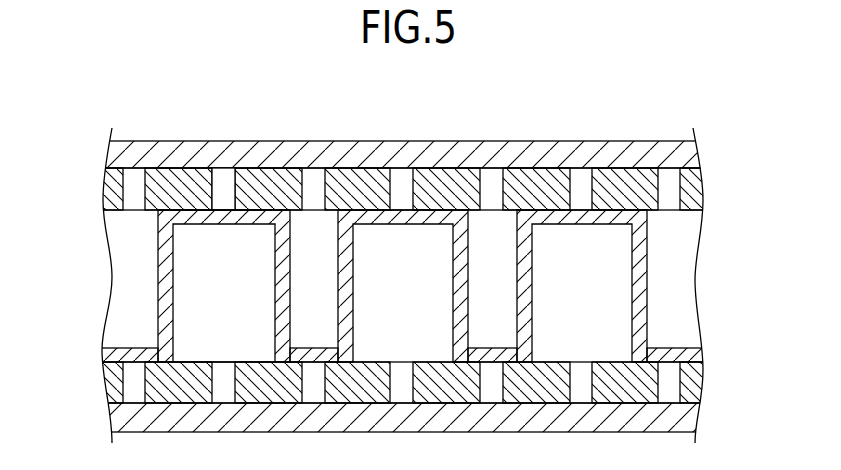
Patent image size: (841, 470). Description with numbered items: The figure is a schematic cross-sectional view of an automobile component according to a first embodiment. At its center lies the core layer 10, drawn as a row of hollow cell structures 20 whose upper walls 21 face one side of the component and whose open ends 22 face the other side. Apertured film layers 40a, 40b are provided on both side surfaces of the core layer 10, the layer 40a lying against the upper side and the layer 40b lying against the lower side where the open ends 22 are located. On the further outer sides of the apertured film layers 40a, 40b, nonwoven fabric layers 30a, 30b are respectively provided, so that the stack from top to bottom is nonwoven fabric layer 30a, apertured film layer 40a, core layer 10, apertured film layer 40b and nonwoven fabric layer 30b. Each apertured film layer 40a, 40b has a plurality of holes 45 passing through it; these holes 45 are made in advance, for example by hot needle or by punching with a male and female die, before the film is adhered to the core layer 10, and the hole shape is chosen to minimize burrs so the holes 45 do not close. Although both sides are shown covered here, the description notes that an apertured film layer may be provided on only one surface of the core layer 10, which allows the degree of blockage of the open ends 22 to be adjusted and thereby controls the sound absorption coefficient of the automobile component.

The core layer 10 is at (701, 283).
The element body 20 is at (200, 262).
The top surface of element body 21 is at (222, 206).
The open end 22 is at (222, 360).
The nonwoven fabric layer 30a is at (692, 150).
The nonwoven fabric layer 30b is at (692, 418).
The apertured film layer 40a is at (699, 188).
The apertured film layer 40b is at (699, 381).
The hole 45 is at (226, 199).